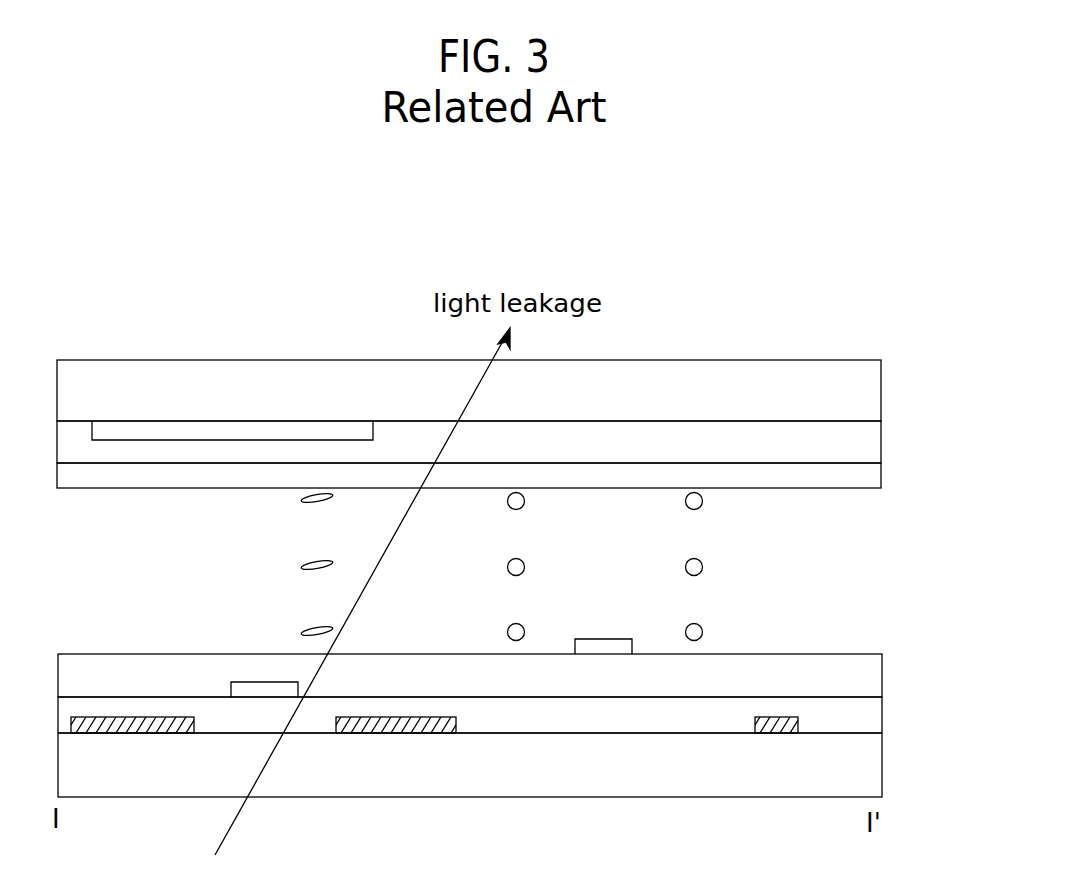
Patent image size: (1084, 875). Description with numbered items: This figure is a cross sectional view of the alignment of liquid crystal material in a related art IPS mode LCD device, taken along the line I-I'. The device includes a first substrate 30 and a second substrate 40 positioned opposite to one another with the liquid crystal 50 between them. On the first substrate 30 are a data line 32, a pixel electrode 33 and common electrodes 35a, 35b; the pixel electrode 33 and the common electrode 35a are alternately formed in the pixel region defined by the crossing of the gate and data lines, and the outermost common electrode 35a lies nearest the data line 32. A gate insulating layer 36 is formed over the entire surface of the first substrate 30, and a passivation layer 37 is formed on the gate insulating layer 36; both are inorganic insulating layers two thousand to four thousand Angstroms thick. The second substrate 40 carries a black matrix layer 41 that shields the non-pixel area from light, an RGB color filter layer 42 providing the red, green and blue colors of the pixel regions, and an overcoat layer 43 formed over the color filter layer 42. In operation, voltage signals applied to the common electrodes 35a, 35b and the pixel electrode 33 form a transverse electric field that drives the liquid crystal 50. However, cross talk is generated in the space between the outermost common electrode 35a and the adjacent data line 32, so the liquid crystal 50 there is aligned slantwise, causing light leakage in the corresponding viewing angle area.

The first substrate 30 is at (882, 768).
The data line 32 is at (255, 690).
The pixel electrode 33 is at (602, 650).
The common electrode 35a is at (395, 733).
The common electrode 35b is at (776, 733).
The gate insulating layer 36 is at (882, 718).
The passivation layer 37 is at (882, 677).
The second substrate 40 is at (881, 393).
The black matrix layer 41 is at (213, 432).
The RGB color filter layer 42 is at (881, 447).
The overcoat layer 43 is at (881, 480).
The liquid crystal 50 is at (700, 503).